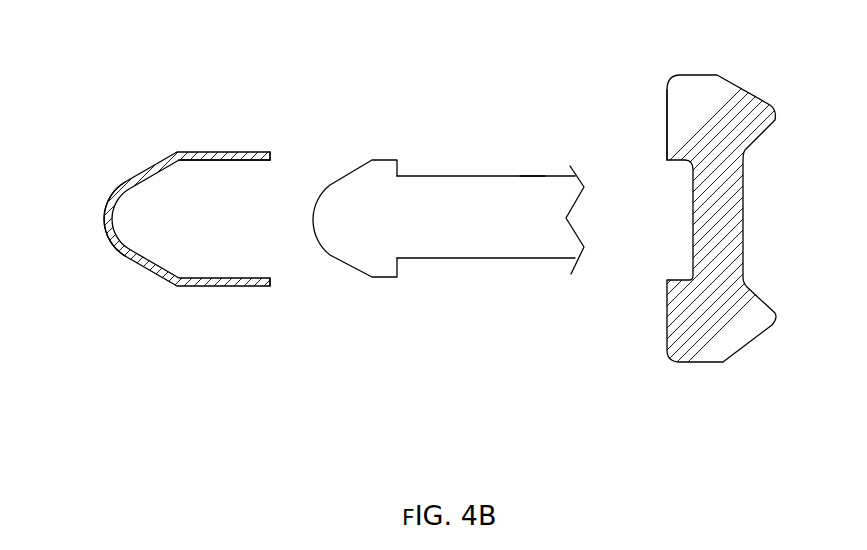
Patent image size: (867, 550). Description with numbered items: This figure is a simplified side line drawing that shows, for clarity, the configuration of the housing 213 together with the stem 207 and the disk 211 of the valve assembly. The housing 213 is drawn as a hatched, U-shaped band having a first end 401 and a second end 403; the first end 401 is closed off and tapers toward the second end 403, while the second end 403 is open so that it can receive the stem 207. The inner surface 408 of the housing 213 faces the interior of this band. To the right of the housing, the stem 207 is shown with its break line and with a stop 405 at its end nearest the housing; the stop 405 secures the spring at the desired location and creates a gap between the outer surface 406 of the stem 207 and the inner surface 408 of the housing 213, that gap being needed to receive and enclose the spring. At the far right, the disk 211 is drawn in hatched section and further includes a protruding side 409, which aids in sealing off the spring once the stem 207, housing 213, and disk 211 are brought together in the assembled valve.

The housing 213 is at (133, 177).
The inner surface of housing 408 is at (203, 163).
The first end of housing 401 is at (105, 264).
The second end of housing 403 is at (292, 272).
The stop 405 is at (400, 162).
The stem 207 is at (443, 259).
The outer surface of stem 406 is at (533, 174).
The disk 211 is at (740, 90).
The protruding side 409 is at (667, 107).